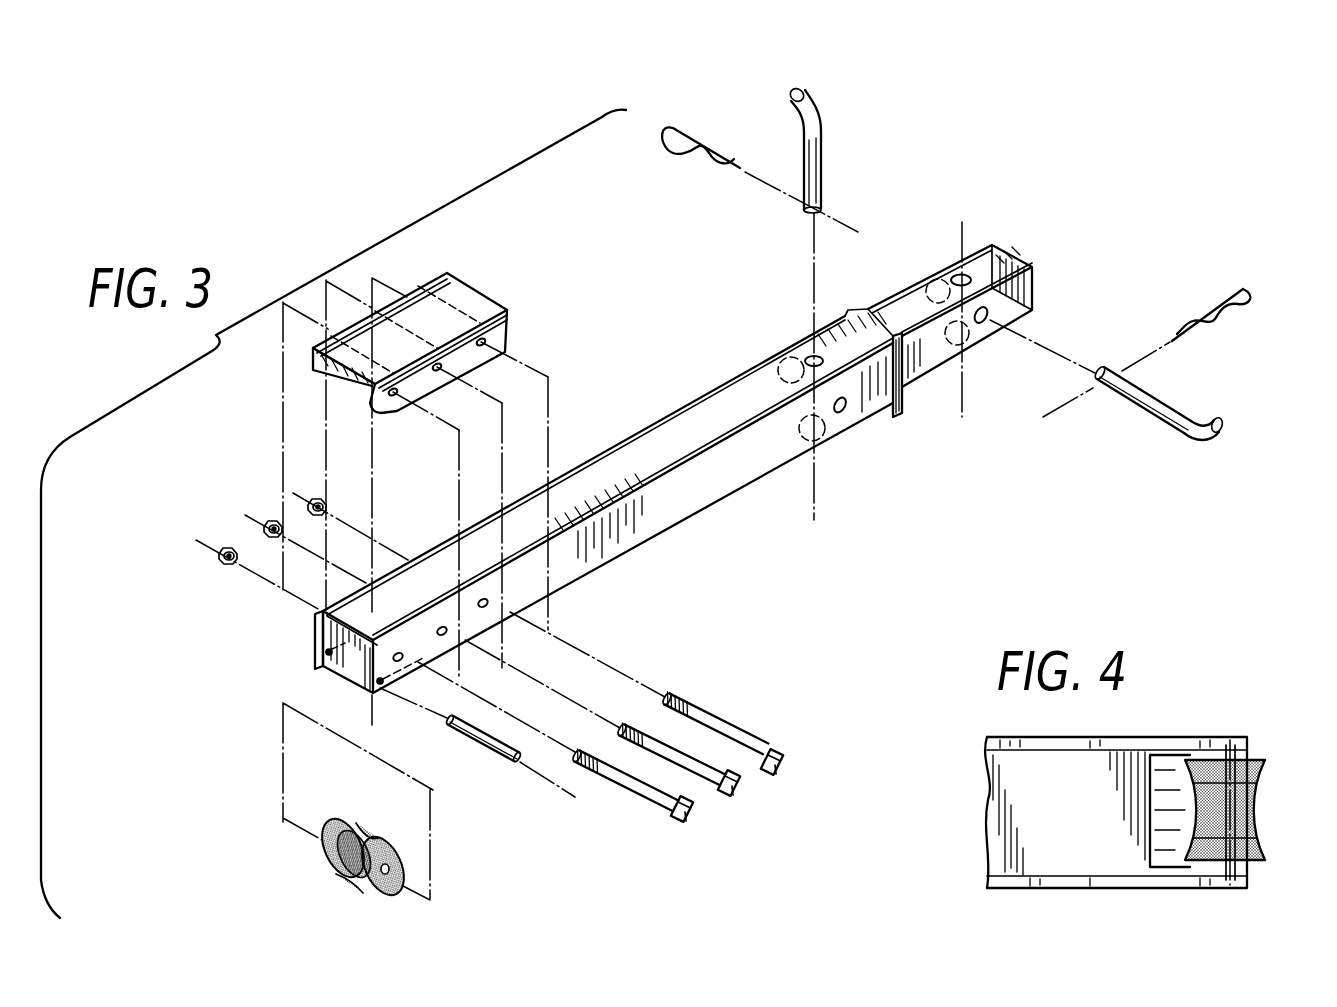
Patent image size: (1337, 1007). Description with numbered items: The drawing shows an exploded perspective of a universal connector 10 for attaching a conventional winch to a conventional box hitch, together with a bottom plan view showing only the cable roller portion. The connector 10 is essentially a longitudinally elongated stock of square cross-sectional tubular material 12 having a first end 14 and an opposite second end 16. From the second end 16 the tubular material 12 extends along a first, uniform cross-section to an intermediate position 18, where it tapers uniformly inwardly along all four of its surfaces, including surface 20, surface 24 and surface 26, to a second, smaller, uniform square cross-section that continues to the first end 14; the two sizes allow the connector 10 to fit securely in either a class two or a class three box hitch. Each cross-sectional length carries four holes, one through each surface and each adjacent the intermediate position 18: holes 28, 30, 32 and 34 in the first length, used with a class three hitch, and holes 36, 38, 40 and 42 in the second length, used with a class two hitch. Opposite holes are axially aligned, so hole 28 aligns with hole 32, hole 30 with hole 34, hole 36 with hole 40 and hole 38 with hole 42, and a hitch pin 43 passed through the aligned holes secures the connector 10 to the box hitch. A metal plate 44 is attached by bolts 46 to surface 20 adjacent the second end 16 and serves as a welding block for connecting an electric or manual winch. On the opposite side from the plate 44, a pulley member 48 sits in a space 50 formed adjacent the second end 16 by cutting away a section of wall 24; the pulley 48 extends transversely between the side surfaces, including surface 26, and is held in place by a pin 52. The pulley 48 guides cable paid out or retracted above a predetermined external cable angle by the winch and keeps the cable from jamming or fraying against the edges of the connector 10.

In FIG. 3, the universal connector 10 is at (589, 222).
In FIG. 3, the tubular material 12 is at (680, 503).
In FIG. 3, the first end 14 is at (1010, 256).
In FIG. 3, the second end 16 is at (313, 649).
In FIG. 3, the intermediate position 18 is at (905, 388).
In FIG. 3, the surface 20 is at (647, 447).
In FIG. 4, the surface 24 is at (1005, 830).
In FIG. 3, the surface 26 is at (577, 560).
In FIG. 3, the hole 28 is at (805, 350).
In FIG. 3, the hole 30 is at (780, 360).
In FIG. 3, the hole 32 is at (818, 490).
In FIG. 3, the hole 34 is at (841, 412).
In FIG. 3, the hole 36 is at (965, 265).
In FIG. 3, the hole 38 is at (934, 283).
In FIG. 3, the hole 40 is at (962, 364).
In FIG. 3, the hole 42 is at (1000, 315).
In FIG. 3, the hitch pin 43 is at (820, 114).
In FIG. 3, the metal plate 44 is at (450, 292).
In FIG. 3, the bolts 46 is at (683, 822).
In FIG. 3, the pulley member 48 is at (324, 872).
In FIG. 4, the pulley member 48 is at (1255, 784).
In FIG. 3, the space 50 is at (346, 669).
In FIG. 4, the space 50 is at (1165, 811).
In FIG. 3, the pin 52 is at (477, 745).
In FIG. 4, the pin 52 is at (1260, 813).